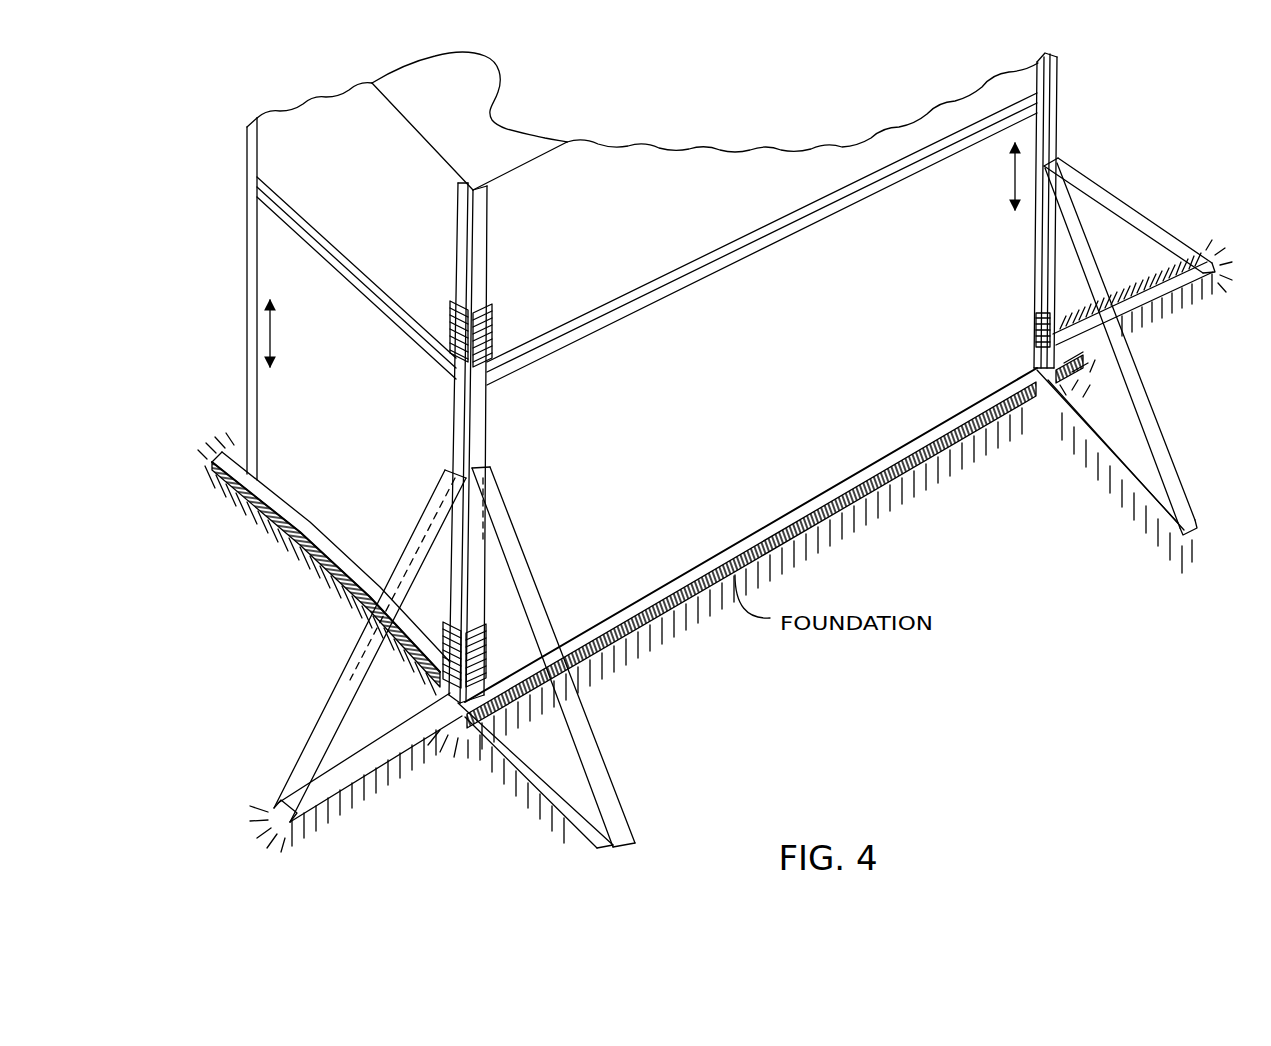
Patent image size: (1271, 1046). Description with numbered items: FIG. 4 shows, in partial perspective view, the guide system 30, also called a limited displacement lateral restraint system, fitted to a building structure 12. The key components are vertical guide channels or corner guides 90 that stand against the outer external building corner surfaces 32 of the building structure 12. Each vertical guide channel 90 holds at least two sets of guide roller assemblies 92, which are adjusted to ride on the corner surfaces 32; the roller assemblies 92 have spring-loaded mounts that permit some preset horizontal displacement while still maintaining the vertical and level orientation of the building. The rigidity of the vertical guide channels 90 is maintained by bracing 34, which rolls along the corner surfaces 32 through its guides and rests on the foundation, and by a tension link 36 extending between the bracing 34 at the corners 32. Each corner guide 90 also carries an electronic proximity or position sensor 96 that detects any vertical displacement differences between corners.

The building structure 12 is at (642, 266).
The guide system 30 is at (1107, 142).
The building corner surfaces 32 is at (463, 273).
The bracing 34 is at (440, 690).
The tension link 36 is at (968, 280).
The vertical guide channel 90 is at (448, 421).
The guide roller assembly 92 is at (493, 344).
The position sensor 96 is at (495, 327).